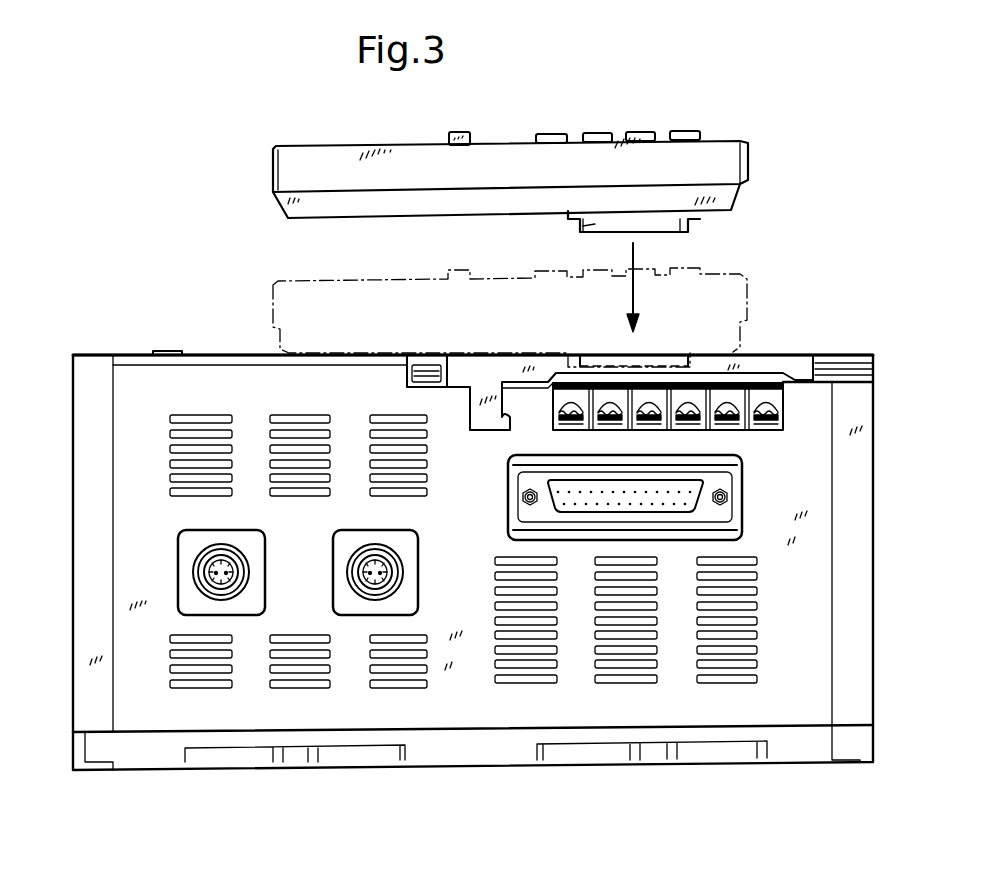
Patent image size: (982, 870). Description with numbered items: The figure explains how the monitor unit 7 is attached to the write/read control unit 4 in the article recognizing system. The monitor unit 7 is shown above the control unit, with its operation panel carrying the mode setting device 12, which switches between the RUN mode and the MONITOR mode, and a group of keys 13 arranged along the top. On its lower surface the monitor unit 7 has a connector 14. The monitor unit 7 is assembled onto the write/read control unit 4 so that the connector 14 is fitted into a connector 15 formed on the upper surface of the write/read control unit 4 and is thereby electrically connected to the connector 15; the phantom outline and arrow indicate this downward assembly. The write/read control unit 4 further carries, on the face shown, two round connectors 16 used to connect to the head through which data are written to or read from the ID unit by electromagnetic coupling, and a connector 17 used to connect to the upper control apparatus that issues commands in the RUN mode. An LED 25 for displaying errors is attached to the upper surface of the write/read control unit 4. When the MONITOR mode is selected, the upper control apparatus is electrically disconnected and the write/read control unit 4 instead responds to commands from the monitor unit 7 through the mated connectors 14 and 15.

The write/read control unit 4 is at (795, 347).
The monitor unit 7 is at (735, 134).
The mode setting device 12 is at (463, 131).
The group of keys 13 is at (632, 123).
The connector 14 is at (584, 226).
The connector 15 is at (666, 358).
The connector 16 is at (205, 560).
The connector 17 is at (742, 478).
The LED 25 is at (165, 350).